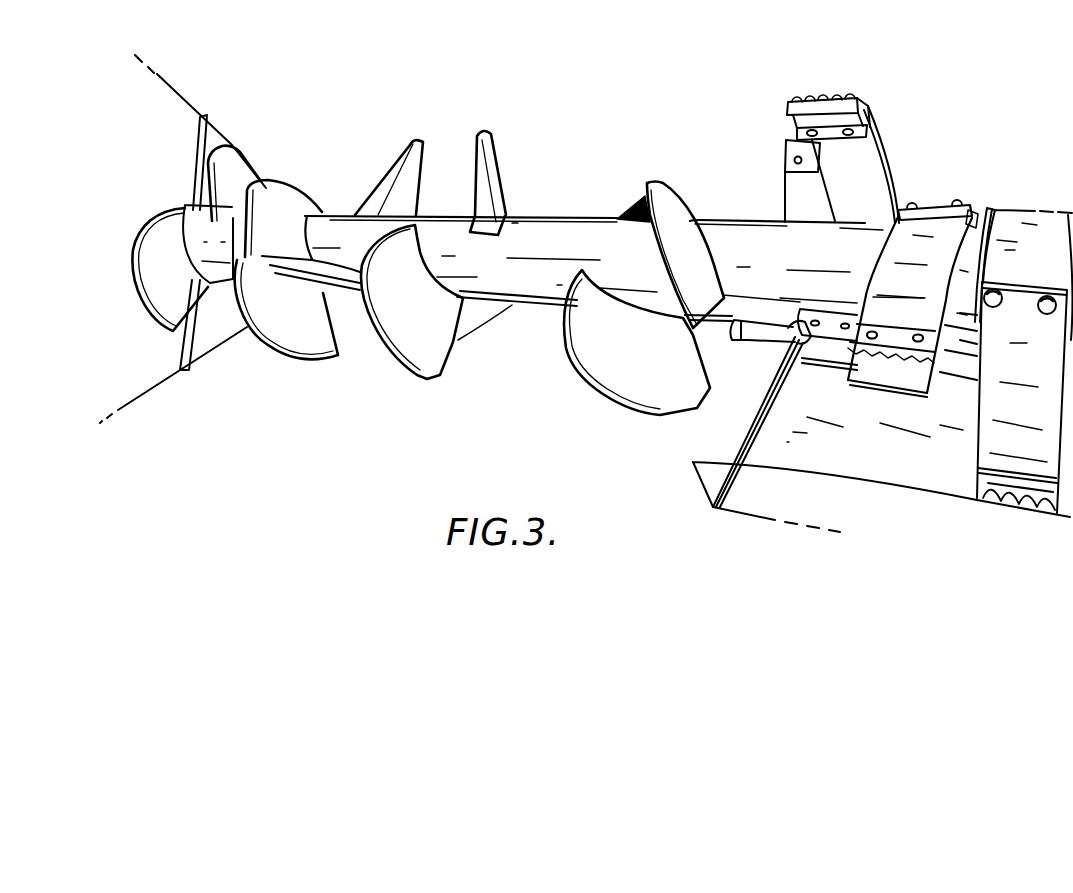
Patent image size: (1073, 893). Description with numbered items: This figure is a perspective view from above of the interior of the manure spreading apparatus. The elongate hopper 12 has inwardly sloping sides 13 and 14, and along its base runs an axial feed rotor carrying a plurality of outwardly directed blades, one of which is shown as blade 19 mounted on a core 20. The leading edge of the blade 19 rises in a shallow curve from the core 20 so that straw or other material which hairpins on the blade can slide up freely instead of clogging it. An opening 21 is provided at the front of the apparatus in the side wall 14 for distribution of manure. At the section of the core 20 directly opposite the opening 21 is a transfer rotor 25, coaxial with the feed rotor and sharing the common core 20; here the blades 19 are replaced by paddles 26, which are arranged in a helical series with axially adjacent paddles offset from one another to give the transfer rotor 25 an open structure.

The hopper 12 is at (377, 162).
The sloping side 13 is at (255, 123).
The side wall 14 is at (220, 415).
The blade 19 is at (290, 361).
The core 20 is at (556, 216).
The opening 21 is at (791, 422).
The transfer rotor 25 is at (917, 178).
The paddles 26 is at (870, 133).